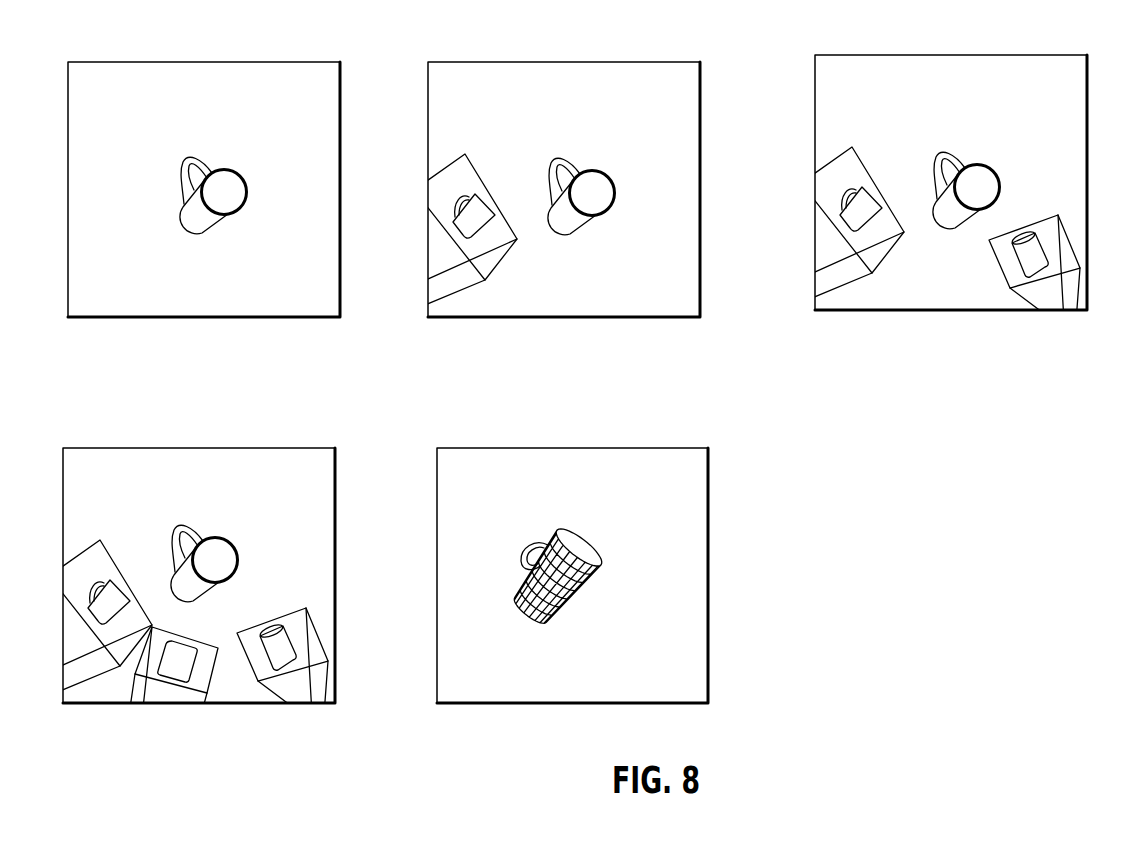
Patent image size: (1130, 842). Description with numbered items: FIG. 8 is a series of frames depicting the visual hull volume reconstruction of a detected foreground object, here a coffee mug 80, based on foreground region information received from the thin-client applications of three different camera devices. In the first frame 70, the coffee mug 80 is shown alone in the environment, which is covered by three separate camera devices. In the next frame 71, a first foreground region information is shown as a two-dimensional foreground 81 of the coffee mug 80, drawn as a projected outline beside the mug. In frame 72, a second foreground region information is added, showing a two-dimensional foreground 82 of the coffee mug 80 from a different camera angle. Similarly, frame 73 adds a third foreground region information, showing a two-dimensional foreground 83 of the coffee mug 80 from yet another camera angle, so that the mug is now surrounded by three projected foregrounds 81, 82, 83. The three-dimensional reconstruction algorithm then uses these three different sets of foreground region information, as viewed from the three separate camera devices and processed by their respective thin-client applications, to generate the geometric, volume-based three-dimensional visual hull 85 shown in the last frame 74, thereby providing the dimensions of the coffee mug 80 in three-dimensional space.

The frame 70 is at (303, 53).
The frame 71 is at (663, 53).
The frame 72 is at (1050, 48).
The frame 73 is at (297, 442).
The frame 74 is at (672, 442).
The coffee mug 80 is at (223, 160).
The two-dimensional foreground 81 is at (473, 160).
The two-dimensional foreground 82 is at (1040, 213).
The two-dimensional foreground 83 is at (188, 630).
The three-dimensional visual hull 85 is at (583, 535).